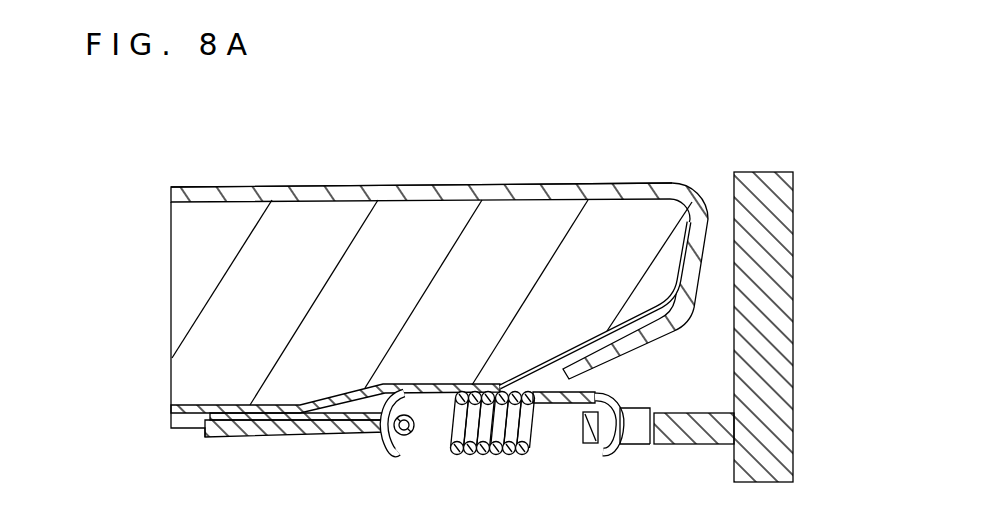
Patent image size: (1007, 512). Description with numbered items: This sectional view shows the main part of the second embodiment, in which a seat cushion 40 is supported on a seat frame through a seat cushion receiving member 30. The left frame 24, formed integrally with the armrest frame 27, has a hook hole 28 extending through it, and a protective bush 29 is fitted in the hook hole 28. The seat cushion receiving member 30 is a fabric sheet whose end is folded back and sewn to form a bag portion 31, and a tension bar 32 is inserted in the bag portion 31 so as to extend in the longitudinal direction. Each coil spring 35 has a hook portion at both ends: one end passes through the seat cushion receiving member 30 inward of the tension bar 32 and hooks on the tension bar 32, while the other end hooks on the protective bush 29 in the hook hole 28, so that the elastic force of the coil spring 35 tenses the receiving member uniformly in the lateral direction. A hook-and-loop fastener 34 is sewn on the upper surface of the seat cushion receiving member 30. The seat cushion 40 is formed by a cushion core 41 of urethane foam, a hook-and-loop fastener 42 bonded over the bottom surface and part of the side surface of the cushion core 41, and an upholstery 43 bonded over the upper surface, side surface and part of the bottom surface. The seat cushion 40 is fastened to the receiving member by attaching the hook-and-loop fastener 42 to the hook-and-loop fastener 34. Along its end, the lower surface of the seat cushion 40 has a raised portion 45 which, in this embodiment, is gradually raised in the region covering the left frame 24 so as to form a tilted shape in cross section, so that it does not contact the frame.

The left frame 24 is at (694, 437).
The armrest frame 27 is at (782, 322).
The hook hole 28 is at (648, 434).
The protective bush 29 is at (598, 432).
The seat cushion receiving member 30 is at (187, 425).
The bag portion 31 is at (272, 430).
The tension bar 32 is at (406, 446).
The hook-and-loop fastener 34 is at (238, 412).
The coil spring 35 is at (484, 455).
The seat cushion 40 is at (420, 188).
The cushion core 41 is at (215, 255).
The hook-and-loop fastener 42 is at (338, 397).
The upholstery 43 is at (350, 194).
The raised portion 45 is at (620, 344).